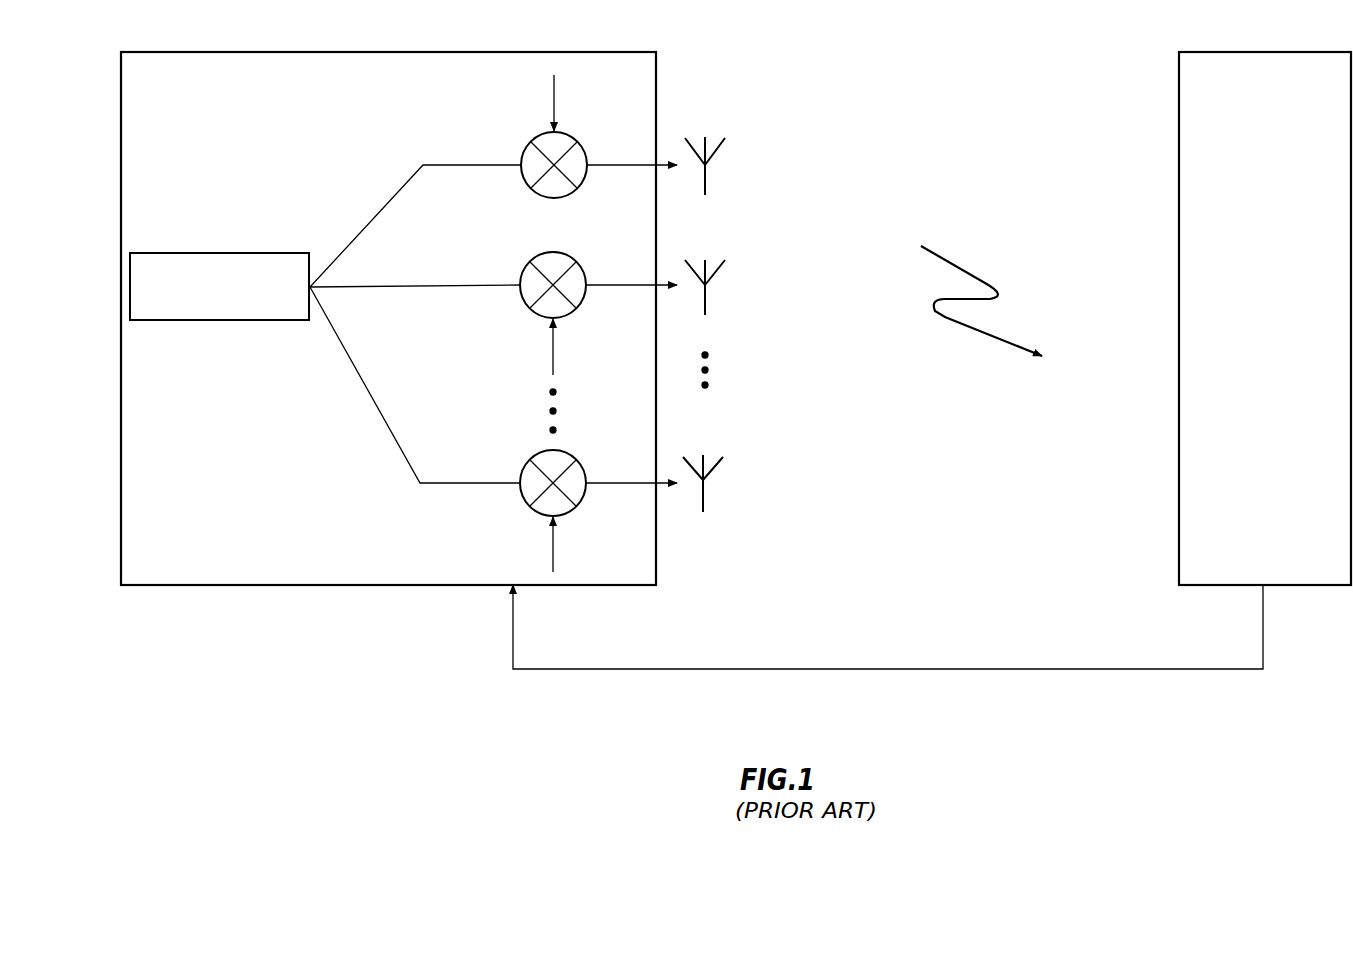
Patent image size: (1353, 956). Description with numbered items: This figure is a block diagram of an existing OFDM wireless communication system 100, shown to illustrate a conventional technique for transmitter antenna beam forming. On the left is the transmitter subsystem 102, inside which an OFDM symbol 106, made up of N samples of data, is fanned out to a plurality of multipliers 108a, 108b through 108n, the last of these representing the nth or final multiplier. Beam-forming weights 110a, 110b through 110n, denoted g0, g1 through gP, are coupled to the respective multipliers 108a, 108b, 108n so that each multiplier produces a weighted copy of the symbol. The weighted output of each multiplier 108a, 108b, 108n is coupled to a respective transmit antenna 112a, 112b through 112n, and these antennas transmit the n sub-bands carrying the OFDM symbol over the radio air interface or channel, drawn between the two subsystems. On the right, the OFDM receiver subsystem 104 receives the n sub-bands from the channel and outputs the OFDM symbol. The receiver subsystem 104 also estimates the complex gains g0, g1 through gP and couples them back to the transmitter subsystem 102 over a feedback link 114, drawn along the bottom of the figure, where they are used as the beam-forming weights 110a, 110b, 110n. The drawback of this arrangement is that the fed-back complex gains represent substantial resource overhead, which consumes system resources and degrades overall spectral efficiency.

The OFDM wireless communication system 100 is at (948, 111).
The transmitter subsystem 102 is at (656, 60).
The receiver subsystem 104 is at (1277, 52).
The OFDM symbol 106 is at (277, 253).
The multiplier 108a is at (527, 150).
The multiplier 108b is at (527, 270).
The multiplier 108n is at (525, 470).
The beam-forming weight 110a is at (554, 90).
The beam-forming weight 110b is at (553, 358).
The beam-forming weight 110n is at (553, 555).
The transmit antenna 112a is at (705, 165).
The transmit antenna 112b is at (705, 285).
The transmit antenna 112n is at (703, 480).
The feedback link 114 is at (997, 669).